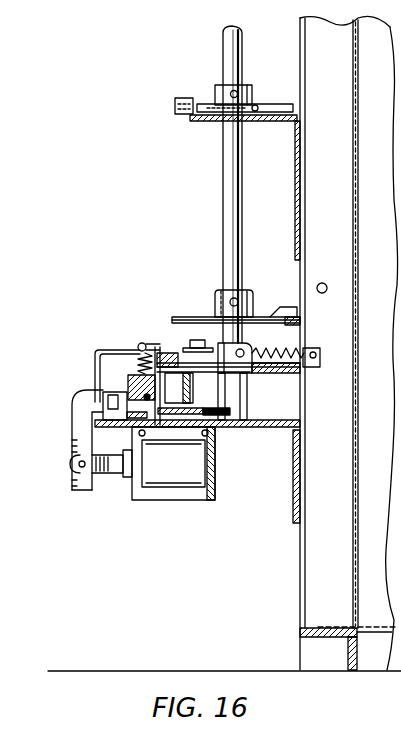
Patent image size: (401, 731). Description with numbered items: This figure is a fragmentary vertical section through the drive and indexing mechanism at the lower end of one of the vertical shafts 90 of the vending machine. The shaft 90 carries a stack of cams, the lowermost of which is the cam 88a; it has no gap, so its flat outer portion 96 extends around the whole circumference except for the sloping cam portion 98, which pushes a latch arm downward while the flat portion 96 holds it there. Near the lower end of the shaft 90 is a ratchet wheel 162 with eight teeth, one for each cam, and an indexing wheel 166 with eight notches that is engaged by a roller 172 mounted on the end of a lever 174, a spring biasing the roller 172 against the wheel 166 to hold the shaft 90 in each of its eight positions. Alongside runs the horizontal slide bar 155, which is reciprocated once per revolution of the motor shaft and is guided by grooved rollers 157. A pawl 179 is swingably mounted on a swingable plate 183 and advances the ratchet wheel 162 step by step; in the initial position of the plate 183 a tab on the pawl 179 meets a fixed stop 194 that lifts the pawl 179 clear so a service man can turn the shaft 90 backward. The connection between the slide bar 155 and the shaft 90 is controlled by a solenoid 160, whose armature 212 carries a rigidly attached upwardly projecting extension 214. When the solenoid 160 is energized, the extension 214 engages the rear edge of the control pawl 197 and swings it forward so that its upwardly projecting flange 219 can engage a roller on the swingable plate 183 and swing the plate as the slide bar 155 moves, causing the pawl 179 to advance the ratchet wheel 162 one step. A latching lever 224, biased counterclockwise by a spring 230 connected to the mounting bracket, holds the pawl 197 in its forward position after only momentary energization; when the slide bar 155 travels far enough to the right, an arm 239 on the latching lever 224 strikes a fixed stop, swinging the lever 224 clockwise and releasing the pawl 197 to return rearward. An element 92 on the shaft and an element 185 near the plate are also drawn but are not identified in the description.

The shaft 90 is at (230, 203).
The block 92 is at (185, 348).
The flat outer portion 96 is at (187, 318).
The sloping cam portion 98 is at (290, 306).
The lowermost cam 88a is at (173, 320).
The slide bar 155 is at (196, 456).
The grooved rollers 157 is at (200, 428).
The solenoid 160 is at (163, 480).
The ratchet wheel 162 is at (295, 368).
The indexing wheel 166 is at (276, 102).
The roller 172 is at (176, 102).
The lever 174 is at (206, 121).
The pawl 179 is at (183, 360).
The swingable plate 183 is at (265, 375).
The spring 185 is at (297, 350).
The fixed stop 194 is at (97, 348).
The control arm 197 is at (232, 409).
The armature 212 is at (115, 474).
The extension 214 is at (73, 438).
The flange 219 is at (248, 383).
The latching lever 224 is at (157, 342).
The spring 230 is at (138, 358).
The arm 239 is at (108, 378).